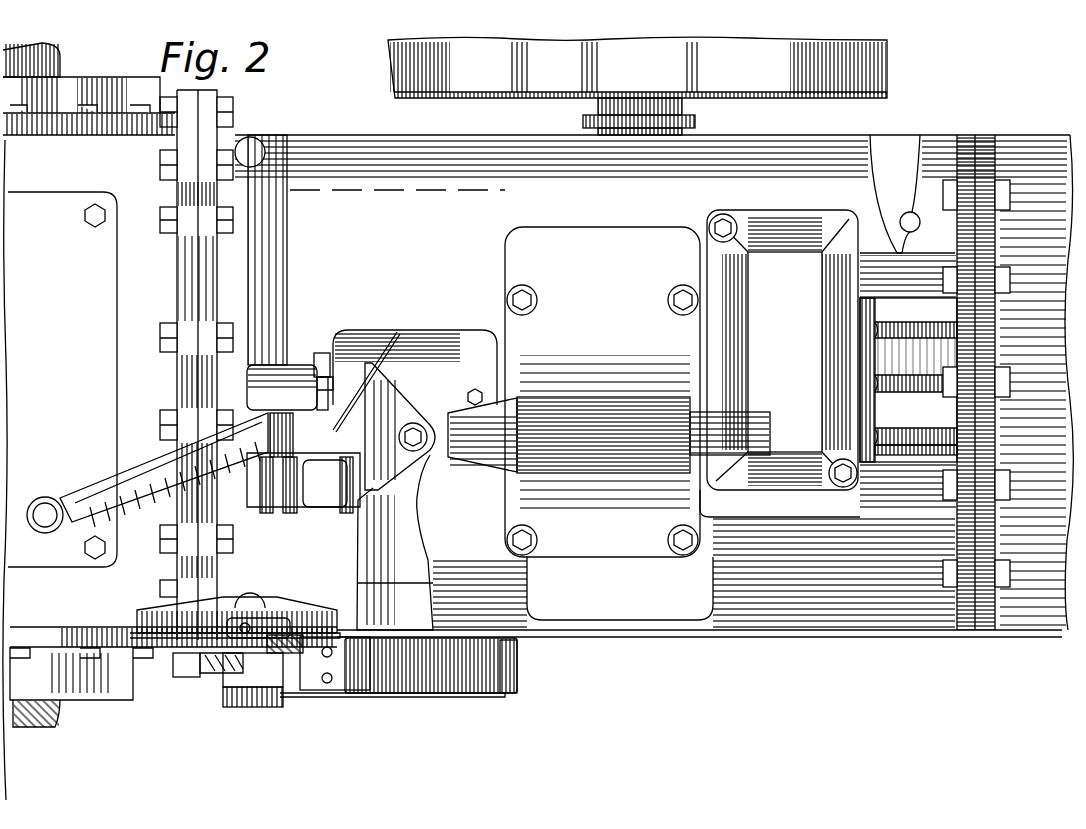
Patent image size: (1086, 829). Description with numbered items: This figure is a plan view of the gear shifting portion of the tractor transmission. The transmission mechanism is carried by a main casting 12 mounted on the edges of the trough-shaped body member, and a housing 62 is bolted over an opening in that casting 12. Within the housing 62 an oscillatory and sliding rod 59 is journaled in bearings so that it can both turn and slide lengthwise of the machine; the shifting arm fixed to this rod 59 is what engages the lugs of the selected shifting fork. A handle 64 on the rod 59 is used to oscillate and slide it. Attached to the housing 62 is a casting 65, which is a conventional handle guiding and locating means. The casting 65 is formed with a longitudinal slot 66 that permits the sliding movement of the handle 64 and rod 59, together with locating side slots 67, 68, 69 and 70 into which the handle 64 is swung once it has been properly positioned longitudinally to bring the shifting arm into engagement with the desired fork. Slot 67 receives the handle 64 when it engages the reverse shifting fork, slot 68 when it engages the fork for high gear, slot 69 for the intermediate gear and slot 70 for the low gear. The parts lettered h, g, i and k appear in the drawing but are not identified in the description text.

The casting 12 is at (940, 134).
The oscillatory and sliding rod 59 is at (385, 400).
The housing 62 is at (682, 415).
The handle 64 is at (103, 484).
The casting 65 is at (366, 368).
The longitudinal slot 66 is at (303, 410).
The side slot 67 is at (270, 493).
The side slot 68 is at (293, 497).
The side slot 69 is at (322, 352).
The side slot 70 is at (380, 487).
The cylinder h is at (515, 677).
The ring g is at (503, 694).
The pawl block i is at (300, 663).
The wheel k is at (888, 57).